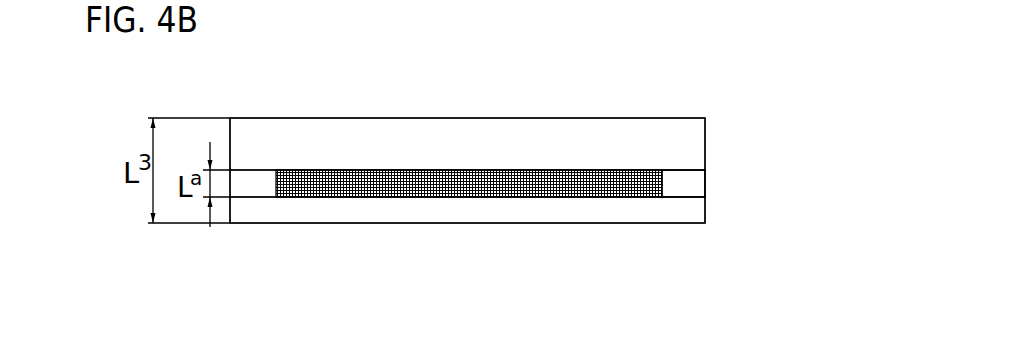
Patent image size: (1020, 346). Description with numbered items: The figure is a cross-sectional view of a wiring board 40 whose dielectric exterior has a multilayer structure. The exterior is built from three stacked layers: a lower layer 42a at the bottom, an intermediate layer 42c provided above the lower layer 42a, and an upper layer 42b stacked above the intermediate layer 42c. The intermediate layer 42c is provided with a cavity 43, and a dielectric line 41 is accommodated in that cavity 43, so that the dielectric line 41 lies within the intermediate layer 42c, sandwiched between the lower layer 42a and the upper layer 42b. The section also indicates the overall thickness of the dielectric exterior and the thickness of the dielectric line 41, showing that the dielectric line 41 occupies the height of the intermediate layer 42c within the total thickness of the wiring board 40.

The wiring board 40 is at (275, 93).
The dielectric line 41 is at (573, 185).
The lower layer 42a is at (695, 211).
The upper layer 42b is at (695, 137).
The intermediate layer 42c is at (693, 183).
The cavity 43 is at (662, 182).